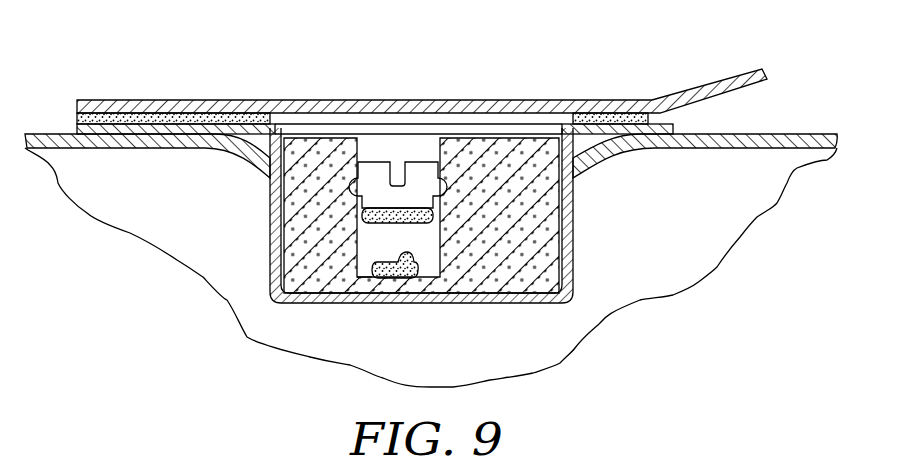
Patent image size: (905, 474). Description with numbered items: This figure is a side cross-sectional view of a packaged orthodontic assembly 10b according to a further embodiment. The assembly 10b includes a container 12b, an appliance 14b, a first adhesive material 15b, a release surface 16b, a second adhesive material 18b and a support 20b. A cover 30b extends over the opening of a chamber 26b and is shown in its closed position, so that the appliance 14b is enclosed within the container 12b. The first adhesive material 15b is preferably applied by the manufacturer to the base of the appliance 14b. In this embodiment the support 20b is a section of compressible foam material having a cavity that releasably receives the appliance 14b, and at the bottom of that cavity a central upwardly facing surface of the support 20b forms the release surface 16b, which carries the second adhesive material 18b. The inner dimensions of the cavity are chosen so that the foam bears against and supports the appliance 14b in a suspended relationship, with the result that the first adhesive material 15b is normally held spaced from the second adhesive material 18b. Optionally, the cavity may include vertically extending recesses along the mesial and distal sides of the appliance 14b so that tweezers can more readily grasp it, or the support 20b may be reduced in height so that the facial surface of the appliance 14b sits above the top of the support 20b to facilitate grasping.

The packaged orthodontic assembly 10b is at (183, 58).
The container 12b is at (290, 100).
The appliance 14b is at (423, 162).
The first adhesive material 15b is at (387, 223).
The release surface 16b is at (418, 268).
The second adhesive material 18b is at (417, 278).
The support 20b is at (284, 226).
The chamber 26b is at (356, 178).
The cover 30b is at (513, 96).